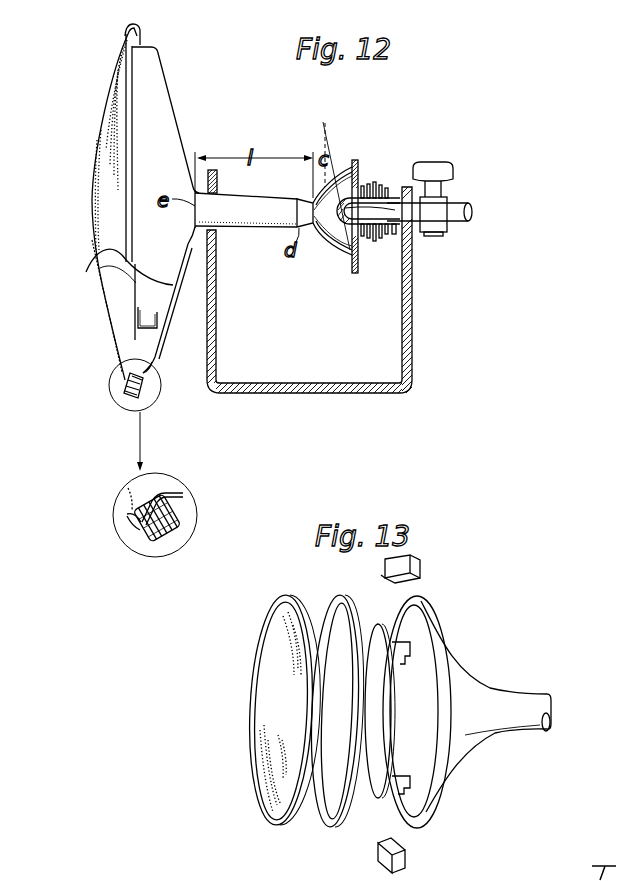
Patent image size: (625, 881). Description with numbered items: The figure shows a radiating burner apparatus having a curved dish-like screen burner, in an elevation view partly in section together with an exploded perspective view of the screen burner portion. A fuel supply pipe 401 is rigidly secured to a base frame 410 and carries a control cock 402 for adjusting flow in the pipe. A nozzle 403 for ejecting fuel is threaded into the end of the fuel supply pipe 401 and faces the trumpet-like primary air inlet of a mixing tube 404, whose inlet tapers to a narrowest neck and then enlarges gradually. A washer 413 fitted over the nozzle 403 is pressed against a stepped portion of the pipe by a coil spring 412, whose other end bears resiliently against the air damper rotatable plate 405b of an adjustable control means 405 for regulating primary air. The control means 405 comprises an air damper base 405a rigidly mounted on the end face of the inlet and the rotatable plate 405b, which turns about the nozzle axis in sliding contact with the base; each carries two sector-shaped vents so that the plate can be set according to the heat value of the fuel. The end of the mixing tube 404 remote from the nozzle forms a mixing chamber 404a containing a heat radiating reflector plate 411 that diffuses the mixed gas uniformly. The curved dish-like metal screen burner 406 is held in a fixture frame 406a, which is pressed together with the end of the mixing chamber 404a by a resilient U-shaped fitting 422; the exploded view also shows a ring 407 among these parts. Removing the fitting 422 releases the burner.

In FIG. 12, the fuel supply pipe 401 is at (464, 205).
In FIG. 12, the control cock 402 is at (440, 198).
In FIG. 12, the nozzle 403 is at (381, 197).
In FIG. 12, the mixing tube 404 is at (228, 220).
In FIG. 13, the mixing tube 404 is at (521, 728).
In FIG. 12, the mixing chamber 404a is at (162, 96).
In FIG. 13, the mixing chamber 404a is at (442, 773).
In FIG. 12, the adjustable control means 405 is at (355, 160).
In FIG. 12, the air damper base 405a is at (350, 250).
In FIG. 12, the air damper rotatable plate 405b is at (347, 266).
In FIG. 12, the screen burner 406 is at (105, 125).
In FIG. 13, the screen burner 406 is at (268, 690).
In FIG. 12, the fixture frame 406a is at (137, 508).
In FIG. 13, the fixture frame 406a is at (265, 622).
In FIG. 12, the retaining ring / clamp 407 is at (155, 365).
In FIG. 13, the retaining ring / clamp 407 is at (323, 820).
In FIG. 12, the base frame 410 is at (407, 347).
In FIG. 12, the heat radiating reflector plate 411 is at (134, 287).
In FIG. 13, the heat radiating reflector plate 411 is at (376, 790).
In FIG. 12, the coil spring 412 is at (372, 234).
In FIG. 12, the washer 413 is at (380, 230).
In FIG. 12, the resilient U-shaped fitting 422 is at (125, 28).
In FIG. 13, the resilient U-shaped fitting 422 is at (421, 571).